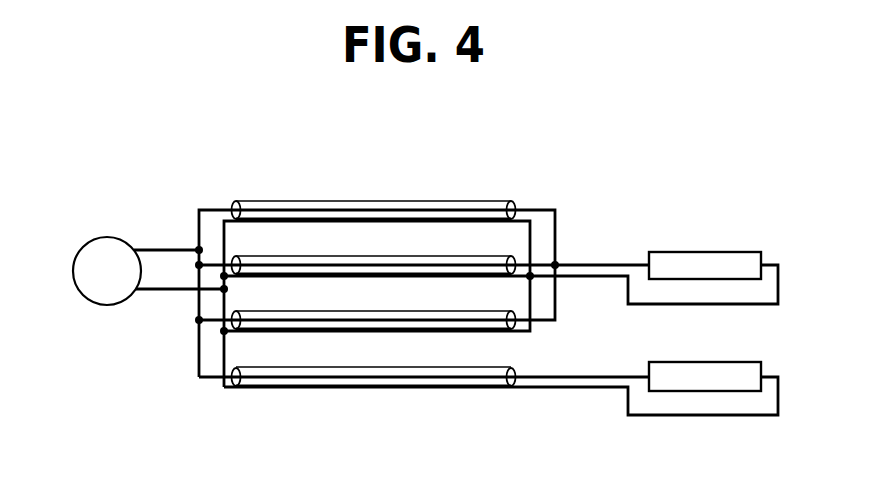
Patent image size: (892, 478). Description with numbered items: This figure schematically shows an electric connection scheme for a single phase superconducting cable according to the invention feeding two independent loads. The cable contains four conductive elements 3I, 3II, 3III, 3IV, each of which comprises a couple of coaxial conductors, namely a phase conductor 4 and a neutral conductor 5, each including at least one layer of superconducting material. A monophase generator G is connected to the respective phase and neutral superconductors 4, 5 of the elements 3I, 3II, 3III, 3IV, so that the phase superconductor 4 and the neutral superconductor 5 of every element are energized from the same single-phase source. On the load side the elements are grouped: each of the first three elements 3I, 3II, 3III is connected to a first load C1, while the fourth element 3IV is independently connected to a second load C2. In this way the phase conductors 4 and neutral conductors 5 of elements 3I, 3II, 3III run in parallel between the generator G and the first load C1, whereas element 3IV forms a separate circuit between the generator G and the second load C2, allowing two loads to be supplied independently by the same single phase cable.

The phase conductor 4 is at (200, 209).
The neutral conductor 5 is at (283, 200).
The first conductive element 3I is at (374, 194).
The second conductive element 3II is at (374, 250).
The third conductive element 3III is at (374, 305).
The fourth conductive element 3IV is at (374, 362).
The monophase generator G is at (93, 296).
The first load C1 is at (702, 254).
The second load C2 is at (757, 362).